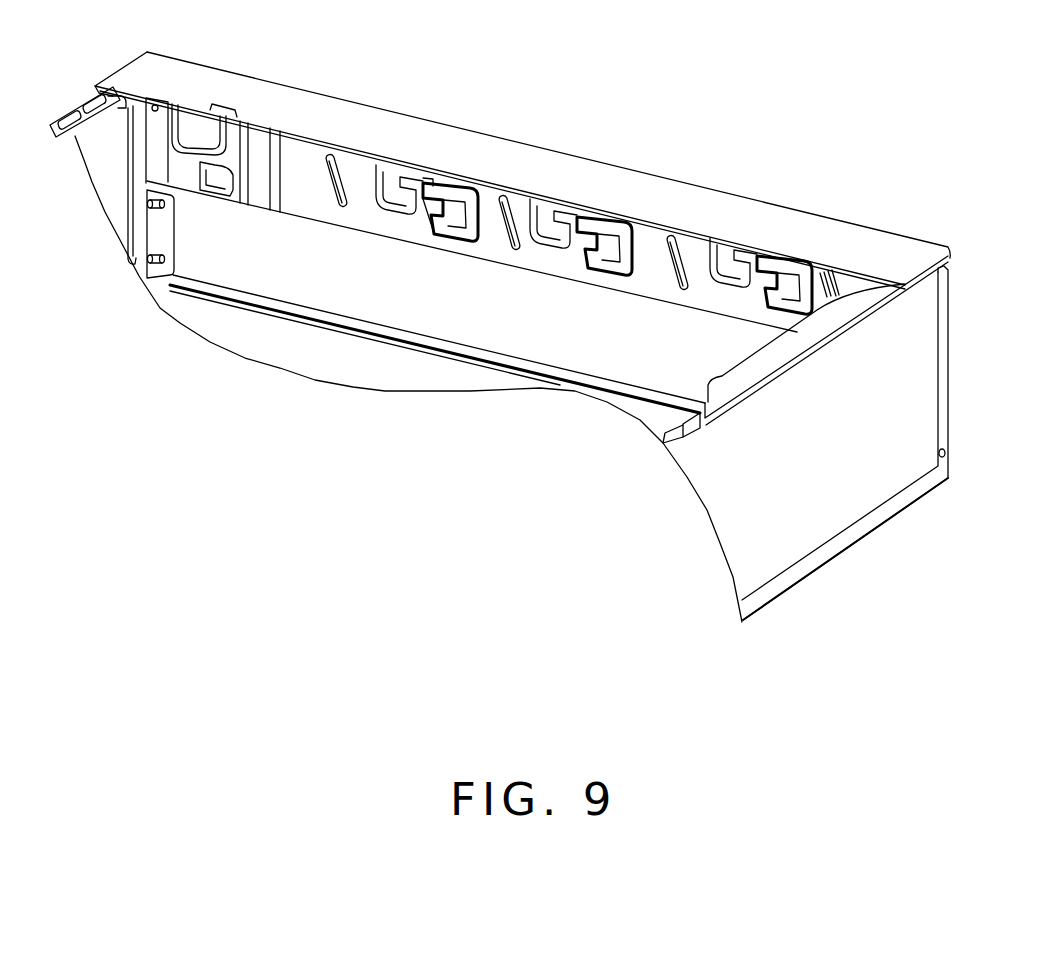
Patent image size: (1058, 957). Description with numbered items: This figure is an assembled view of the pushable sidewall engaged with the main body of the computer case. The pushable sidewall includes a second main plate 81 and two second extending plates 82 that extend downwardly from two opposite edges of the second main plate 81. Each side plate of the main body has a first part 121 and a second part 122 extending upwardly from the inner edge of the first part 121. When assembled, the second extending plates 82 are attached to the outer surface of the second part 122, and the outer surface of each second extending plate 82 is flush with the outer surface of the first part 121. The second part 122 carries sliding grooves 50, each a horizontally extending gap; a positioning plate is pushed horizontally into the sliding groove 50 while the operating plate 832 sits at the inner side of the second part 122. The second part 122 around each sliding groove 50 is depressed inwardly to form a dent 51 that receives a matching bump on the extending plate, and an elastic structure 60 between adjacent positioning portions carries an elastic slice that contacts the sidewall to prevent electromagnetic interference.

The second main plate 81 is at (237, 87).
The second extending plate 82 is at (553, 207).
The operating plate 832 is at (422, 180).
The second part 122 is at (655, 247).
The first part 121 is at (697, 353).
The elastic structure 60 is at (333, 207).
The sliding groove 50 is at (437, 240).
The dent 51 is at (468, 224).